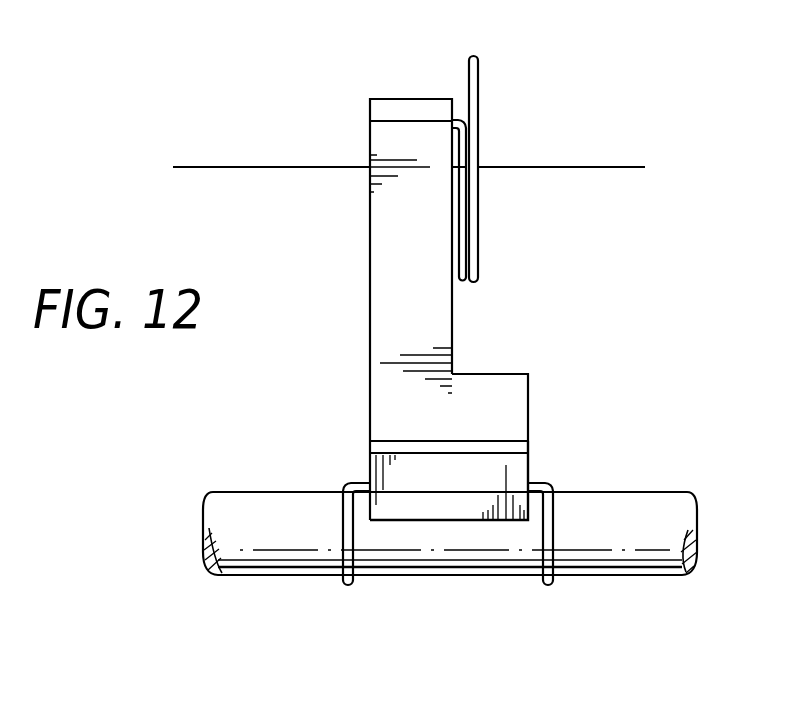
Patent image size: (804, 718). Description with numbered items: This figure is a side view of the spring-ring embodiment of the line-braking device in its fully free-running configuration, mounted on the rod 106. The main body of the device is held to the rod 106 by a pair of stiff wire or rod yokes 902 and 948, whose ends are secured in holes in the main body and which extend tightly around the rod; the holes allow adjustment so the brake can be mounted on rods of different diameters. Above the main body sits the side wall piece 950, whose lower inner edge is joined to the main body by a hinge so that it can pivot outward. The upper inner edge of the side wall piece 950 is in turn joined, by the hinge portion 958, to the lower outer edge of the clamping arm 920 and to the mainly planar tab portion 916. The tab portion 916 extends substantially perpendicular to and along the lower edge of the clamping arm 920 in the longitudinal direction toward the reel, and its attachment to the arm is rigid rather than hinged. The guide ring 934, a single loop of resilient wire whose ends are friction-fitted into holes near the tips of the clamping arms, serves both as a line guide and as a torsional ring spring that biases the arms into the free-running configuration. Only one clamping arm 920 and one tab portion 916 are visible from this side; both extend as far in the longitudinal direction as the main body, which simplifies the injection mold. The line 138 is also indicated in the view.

The rod 106 is at (480, 553).
The surface line 138 is at (307, 170).
The yoke 902 is at (546, 588).
The tab portion 916 is at (493, 395).
The clamping arm 920 is at (398, 137).
The guide ring 934 is at (478, 97).
The yoke 948 is at (345, 588).
The side wall piece 950 is at (493, 473).
The hinge portion 958 is at (396, 445).